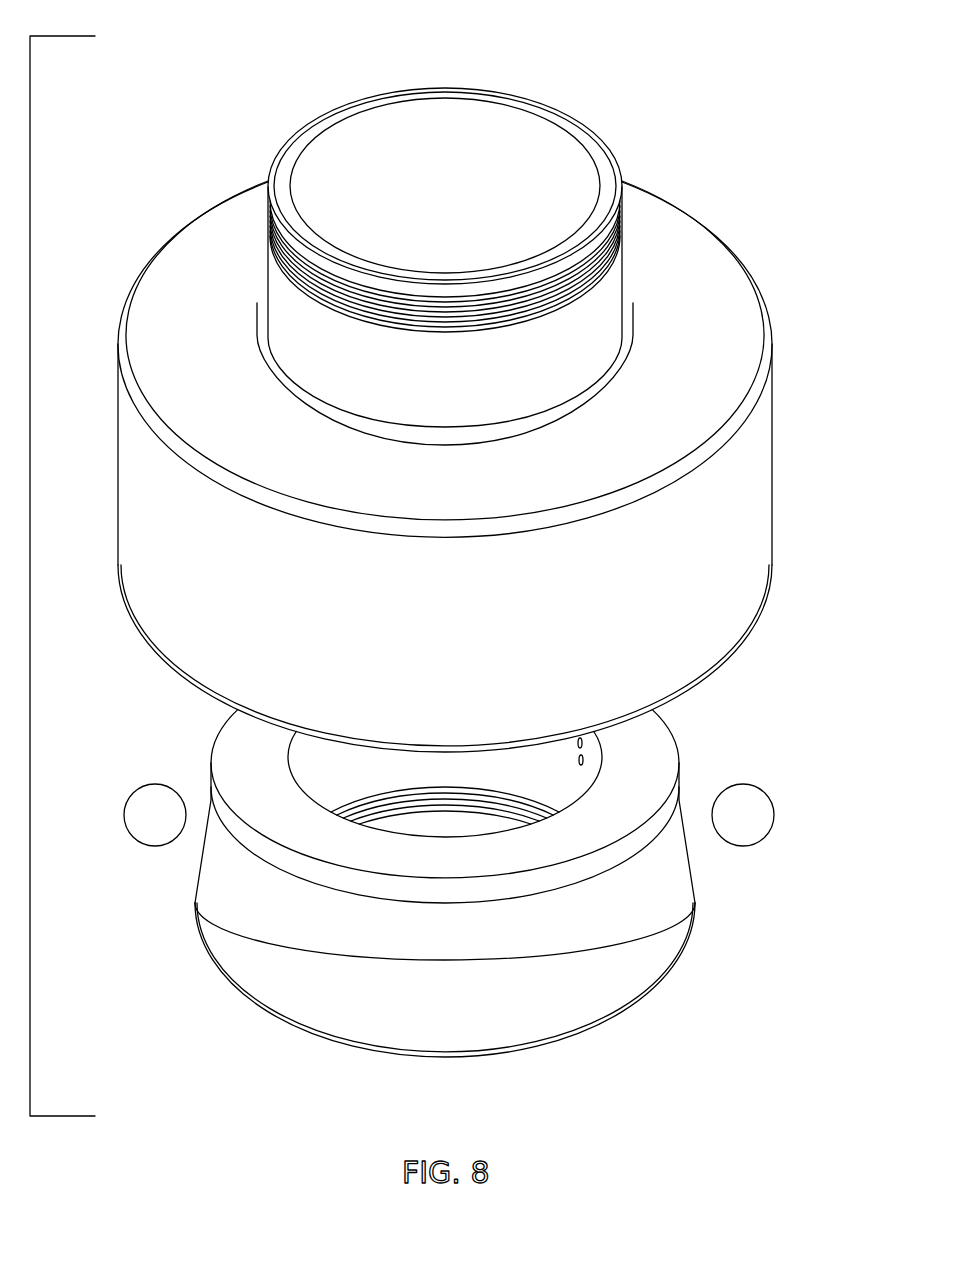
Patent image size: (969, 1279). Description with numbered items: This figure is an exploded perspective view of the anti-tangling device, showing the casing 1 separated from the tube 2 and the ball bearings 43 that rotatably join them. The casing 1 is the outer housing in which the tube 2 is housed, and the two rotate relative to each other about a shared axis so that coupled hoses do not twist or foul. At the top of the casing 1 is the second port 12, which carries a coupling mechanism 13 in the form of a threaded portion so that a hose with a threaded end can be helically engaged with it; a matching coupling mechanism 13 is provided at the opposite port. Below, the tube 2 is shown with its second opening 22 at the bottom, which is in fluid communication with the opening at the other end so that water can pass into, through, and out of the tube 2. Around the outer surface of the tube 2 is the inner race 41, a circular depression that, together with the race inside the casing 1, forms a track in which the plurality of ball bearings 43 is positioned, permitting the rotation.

The casing 1 is at (729, 124).
The second port 12 is at (441, 76).
The coupling mechanism 13 is at (603, 268).
The tube 2 is at (175, 928).
The second opening 22 is at (452, 1083).
The inner race 41 is at (461, 930).
The ball bearings 43 is at (152, 833).